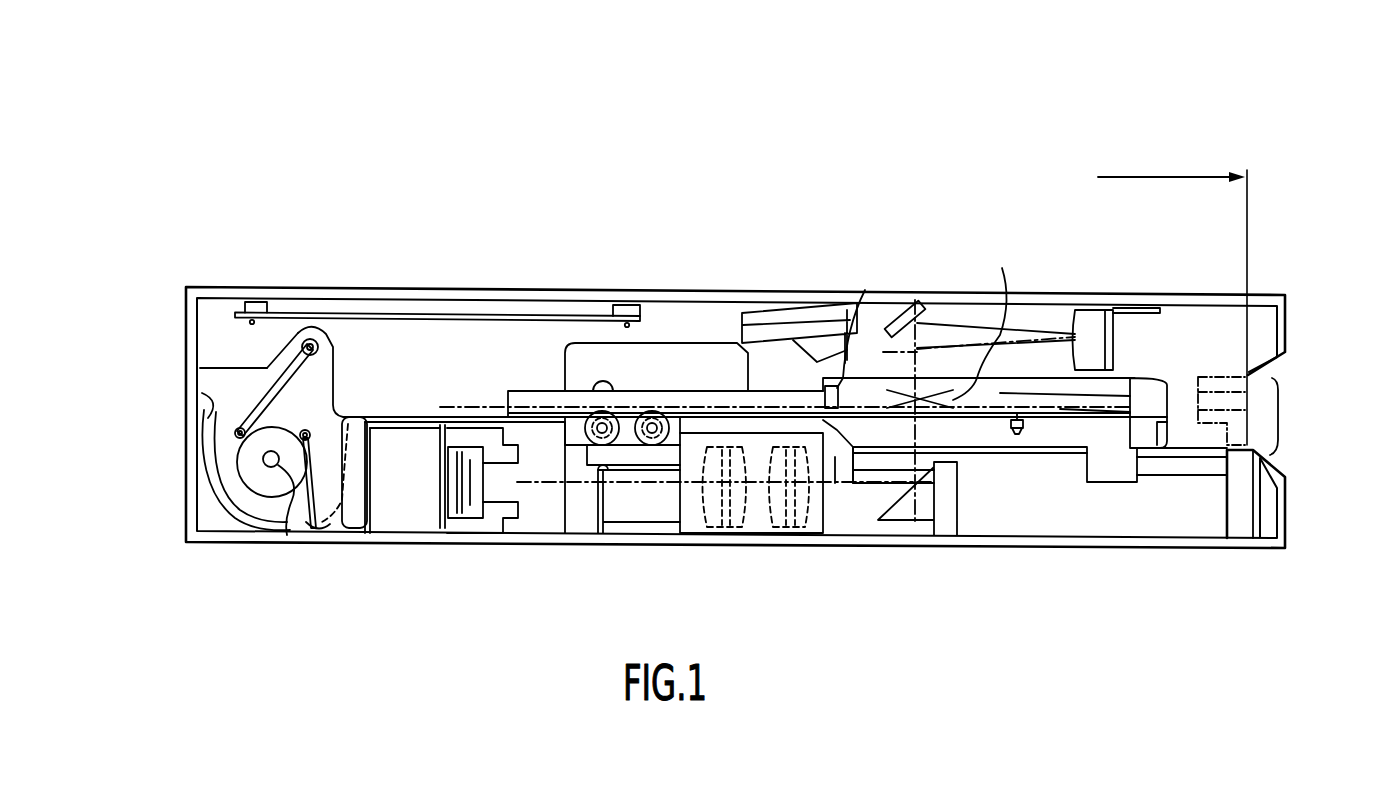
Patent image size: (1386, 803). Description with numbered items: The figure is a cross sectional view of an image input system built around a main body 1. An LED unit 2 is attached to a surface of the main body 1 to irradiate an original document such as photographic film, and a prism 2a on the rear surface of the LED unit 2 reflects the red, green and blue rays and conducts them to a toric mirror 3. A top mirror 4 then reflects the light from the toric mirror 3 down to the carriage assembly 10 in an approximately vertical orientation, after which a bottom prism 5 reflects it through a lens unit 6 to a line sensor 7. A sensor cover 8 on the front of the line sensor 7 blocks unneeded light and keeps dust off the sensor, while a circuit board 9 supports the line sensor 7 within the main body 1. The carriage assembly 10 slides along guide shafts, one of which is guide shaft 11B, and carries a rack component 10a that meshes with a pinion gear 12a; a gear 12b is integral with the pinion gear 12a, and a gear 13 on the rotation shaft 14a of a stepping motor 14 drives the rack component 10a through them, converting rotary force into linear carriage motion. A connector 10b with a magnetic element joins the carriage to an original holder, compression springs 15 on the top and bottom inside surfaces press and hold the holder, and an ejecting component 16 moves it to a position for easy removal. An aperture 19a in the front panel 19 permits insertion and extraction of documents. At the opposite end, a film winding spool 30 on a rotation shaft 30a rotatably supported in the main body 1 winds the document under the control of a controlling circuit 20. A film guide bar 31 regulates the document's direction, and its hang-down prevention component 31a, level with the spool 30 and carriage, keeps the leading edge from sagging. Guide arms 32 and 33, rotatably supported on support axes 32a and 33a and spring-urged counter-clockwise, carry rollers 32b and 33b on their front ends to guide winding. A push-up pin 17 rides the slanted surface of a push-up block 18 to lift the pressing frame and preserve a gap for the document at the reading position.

The main body 1 is at (780, 339).
The LED unit 2 is at (799, 299).
The prism 2a is at (825, 299).
The toric mirror 3 is at (1093, 303).
The top mirror 4 is at (979, 294).
The bottom prism 5 is at (917, 448).
The lens unit 6 is at (725, 515).
The line sensor 7 is at (476, 522).
The sensor cover 8 is at (492, 512).
The circuit board 9 is at (440, 511).
The carriage assembly 10 is at (995, 342).
The rack component 10a is at (766, 374).
The connector 10b is at (1133, 522).
The guide shaft 11B is at (1040, 522).
The pinion gear 12a is at (648, 340).
The gear 12b is at (588, 340).
The gear 13 is at (712, 334).
The stepping motor 14 is at (556, 384).
The rotation shaft 14a is at (616, 514).
The compression springs 15 is at (985, 318).
The ejecting component 16 is at (872, 312).
The push-up pin 17 is at (997, 516).
The push-up block 18 is at (846, 519).
The front panel 19 is at (1287, 494).
The aperture 19a is at (1308, 416).
The controlling circuit 20 is at (437, 281).
The film winding spool 30 is at (267, 521).
The rotation shaft 30a is at (302, 532).
The film guide bar 31 is at (228, 504).
The hang-down prevention component 31a is at (412, 384).
The guide arm 32 is at (219, 376).
The support axis 32a is at (314, 338).
The roller 32b is at (203, 372).
The guide arm 33 is at (366, 507).
The support axis 33a is at (345, 542).
The roller 33b is at (349, 372).